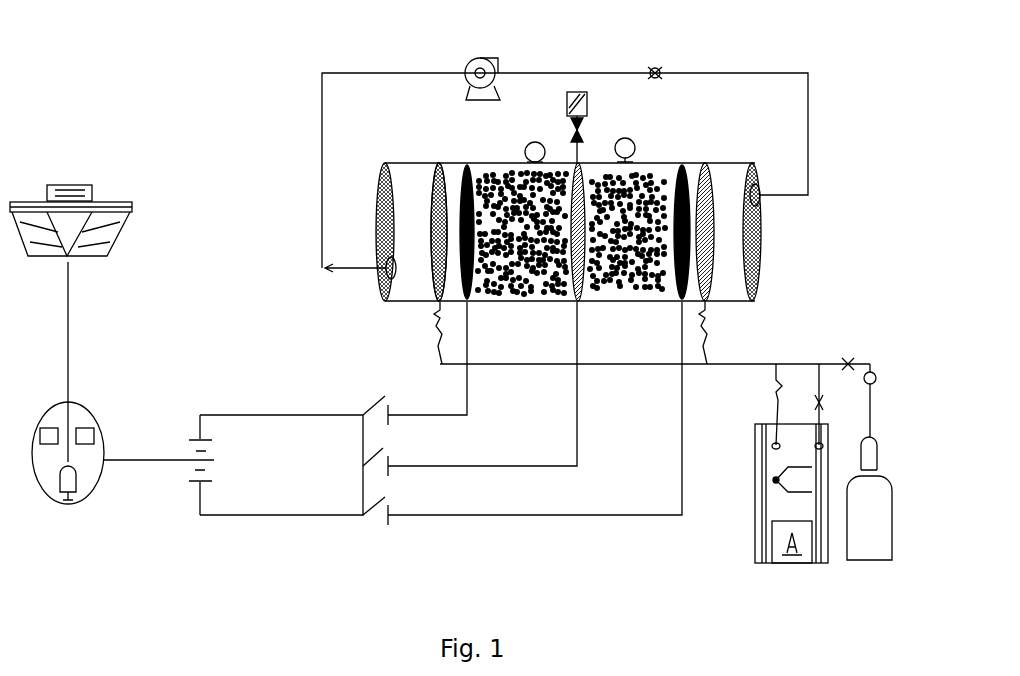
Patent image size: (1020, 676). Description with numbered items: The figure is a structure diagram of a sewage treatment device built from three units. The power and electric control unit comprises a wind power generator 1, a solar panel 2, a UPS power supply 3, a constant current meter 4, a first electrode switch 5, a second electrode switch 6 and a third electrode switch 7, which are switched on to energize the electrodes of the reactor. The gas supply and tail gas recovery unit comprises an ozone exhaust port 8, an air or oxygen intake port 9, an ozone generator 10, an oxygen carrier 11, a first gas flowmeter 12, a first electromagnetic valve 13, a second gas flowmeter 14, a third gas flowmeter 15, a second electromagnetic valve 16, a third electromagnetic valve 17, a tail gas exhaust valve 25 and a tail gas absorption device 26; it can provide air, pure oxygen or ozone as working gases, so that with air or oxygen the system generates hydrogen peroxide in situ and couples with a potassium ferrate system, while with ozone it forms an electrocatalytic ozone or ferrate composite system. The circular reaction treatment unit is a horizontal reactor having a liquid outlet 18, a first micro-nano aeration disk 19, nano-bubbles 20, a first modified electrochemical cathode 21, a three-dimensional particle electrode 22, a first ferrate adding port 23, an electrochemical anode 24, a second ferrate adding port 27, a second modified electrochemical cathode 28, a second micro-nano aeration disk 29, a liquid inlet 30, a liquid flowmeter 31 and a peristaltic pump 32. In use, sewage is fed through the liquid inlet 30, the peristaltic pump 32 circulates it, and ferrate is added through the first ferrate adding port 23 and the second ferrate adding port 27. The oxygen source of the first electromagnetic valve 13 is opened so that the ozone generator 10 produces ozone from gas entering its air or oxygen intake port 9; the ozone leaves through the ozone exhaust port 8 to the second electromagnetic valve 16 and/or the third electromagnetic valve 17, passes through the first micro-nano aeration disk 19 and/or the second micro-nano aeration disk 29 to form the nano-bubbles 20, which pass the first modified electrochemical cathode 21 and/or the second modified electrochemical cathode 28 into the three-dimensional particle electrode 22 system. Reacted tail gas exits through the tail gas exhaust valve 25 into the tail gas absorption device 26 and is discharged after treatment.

The wind power generator 1 is at (66, 185).
The solar panel 2 is at (75, 233).
The UPS power supply 3 is at (123, 383).
The constant current meter 4 is at (200, 446).
The first electrode switch 5 is at (407, 363).
The second electrode switch 6 is at (462, 389).
The third electrode switch 7 is at (514, 413).
The ozone exhaust port 8 is at (783, 493).
The air or oxygen intake port 9 is at (803, 493).
The ozone generator 10 is at (792, 557).
The oxygen carrier 11 is at (884, 498).
The first gas flowmeter 12 is at (884, 400).
The first electromagnetic valve 13 is at (848, 347).
The second gas flowmeter 14 is at (834, 406).
The third gas flowmeter 15 is at (761, 406).
The second electromagnetic valve 16 is at (719, 333).
The third electromagnetic valve 17 is at (637, 333).
The liquid outlet 18 is at (565, 187).
The first micro-nano aeration disk 19 is at (428, 232).
The nano-bubbles 20 is at (445, 220).
The first modified electrochemical cathode 21 is at (471, 247).
The three-dimensional particle electrode 22 is at (570, 231).
The first ferrate adding port 23 is at (535, 138).
The electrochemical anode 24 is at (575, 247).
The tail gas exhaust valve 25 is at (589, 139).
The tail gas absorption device 26 is at (591, 105).
The second ferrate adding port 27 is at (626, 140).
The second modified electrochemical cathode 28 is at (683, 214).
The second micro-nano aeration disk 29 is at (708, 217).
The liquid inlet 30 is at (764, 232).
The liquid flowmeter 31 is at (657, 58).
The peristaltic pump 32 is at (483, 58).